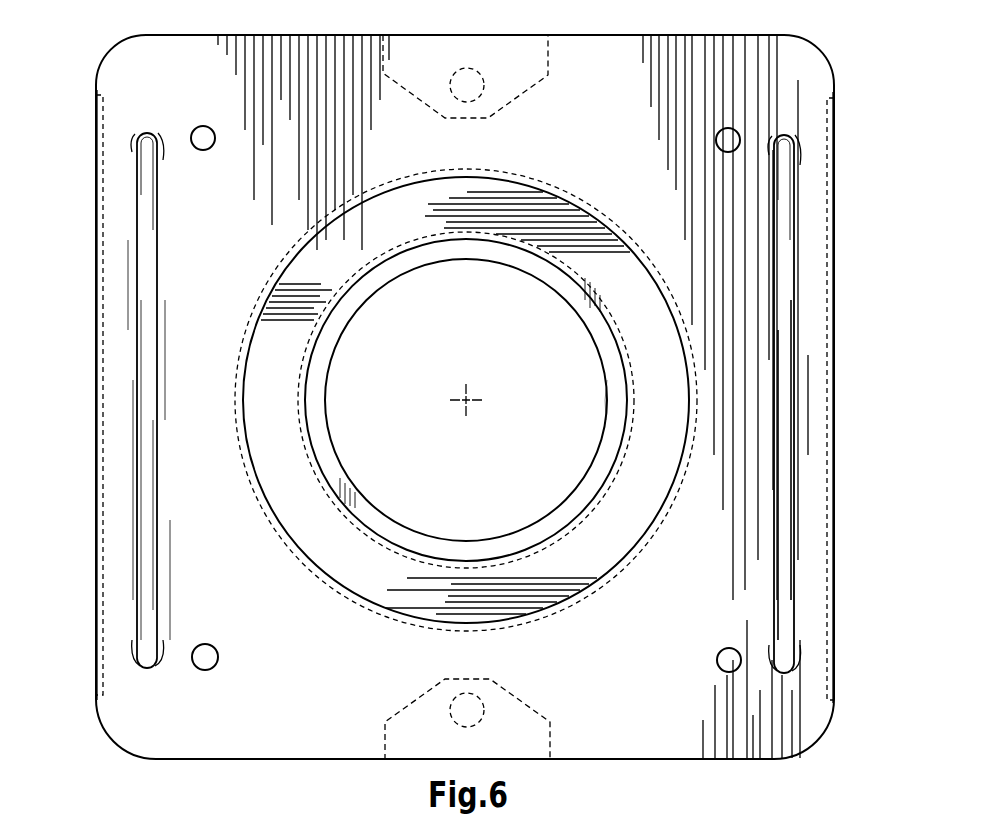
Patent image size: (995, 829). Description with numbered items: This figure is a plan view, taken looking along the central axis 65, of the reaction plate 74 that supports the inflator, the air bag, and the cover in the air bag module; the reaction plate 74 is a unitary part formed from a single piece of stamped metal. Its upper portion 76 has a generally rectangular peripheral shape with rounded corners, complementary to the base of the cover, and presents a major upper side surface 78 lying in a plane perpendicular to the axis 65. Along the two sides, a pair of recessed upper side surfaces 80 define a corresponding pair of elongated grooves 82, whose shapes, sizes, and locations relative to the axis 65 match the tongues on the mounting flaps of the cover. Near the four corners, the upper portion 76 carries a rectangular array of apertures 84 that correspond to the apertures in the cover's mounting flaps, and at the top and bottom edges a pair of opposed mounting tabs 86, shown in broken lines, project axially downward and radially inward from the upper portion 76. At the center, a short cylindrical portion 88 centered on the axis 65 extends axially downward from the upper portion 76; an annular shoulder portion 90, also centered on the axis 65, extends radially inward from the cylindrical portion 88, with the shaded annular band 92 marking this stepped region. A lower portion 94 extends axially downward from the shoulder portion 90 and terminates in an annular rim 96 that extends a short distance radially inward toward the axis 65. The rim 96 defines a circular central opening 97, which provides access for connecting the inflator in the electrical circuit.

The reaction plate 74 is at (58, 185).
The upper portion 76 is at (100, 330).
The major upper side surface 78 is at (120, 398).
The recessed upper side surfaces 80 is at (147, 490).
The grooves 82 is at (141, 515).
The apertures 84 is at (196, 128).
The mounting tabs 86 is at (500, 70).
The cylindrical portion 88 is at (283, 530).
The annular shoulder portion 90 is at (270, 380).
The annular groove 92 is at (268, 422).
The lower portion 94 is at (596, 488).
The annular rim 96 is at (609, 352).
The circular central opening 97 is at (600, 382).
The axis 65 is at (472, 393).